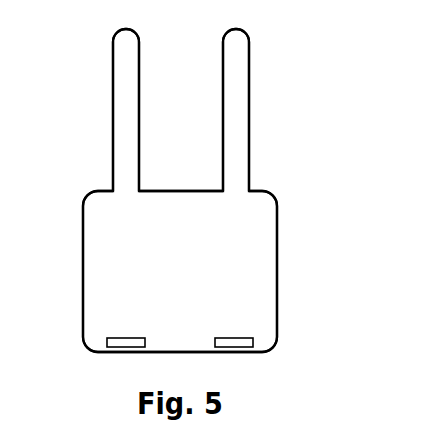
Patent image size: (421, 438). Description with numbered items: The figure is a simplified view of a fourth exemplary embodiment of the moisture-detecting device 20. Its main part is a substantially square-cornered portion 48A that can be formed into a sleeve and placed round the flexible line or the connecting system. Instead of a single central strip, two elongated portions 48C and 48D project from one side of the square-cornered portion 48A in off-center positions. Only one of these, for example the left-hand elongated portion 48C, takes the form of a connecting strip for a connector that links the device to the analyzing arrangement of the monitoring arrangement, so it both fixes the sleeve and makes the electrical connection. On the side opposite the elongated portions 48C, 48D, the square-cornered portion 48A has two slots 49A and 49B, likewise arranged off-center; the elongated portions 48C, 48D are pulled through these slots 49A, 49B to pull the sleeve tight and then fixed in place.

The plug assembly 20 is at (280, 74).
The square-cornered portion 48A is at (280, 244).
The left-hand elongated portion 48C is at (110, 121).
The elongated portion 48D is at (250, 127).
The slot 49A is at (123, 342).
The slot 49B is at (230, 342).